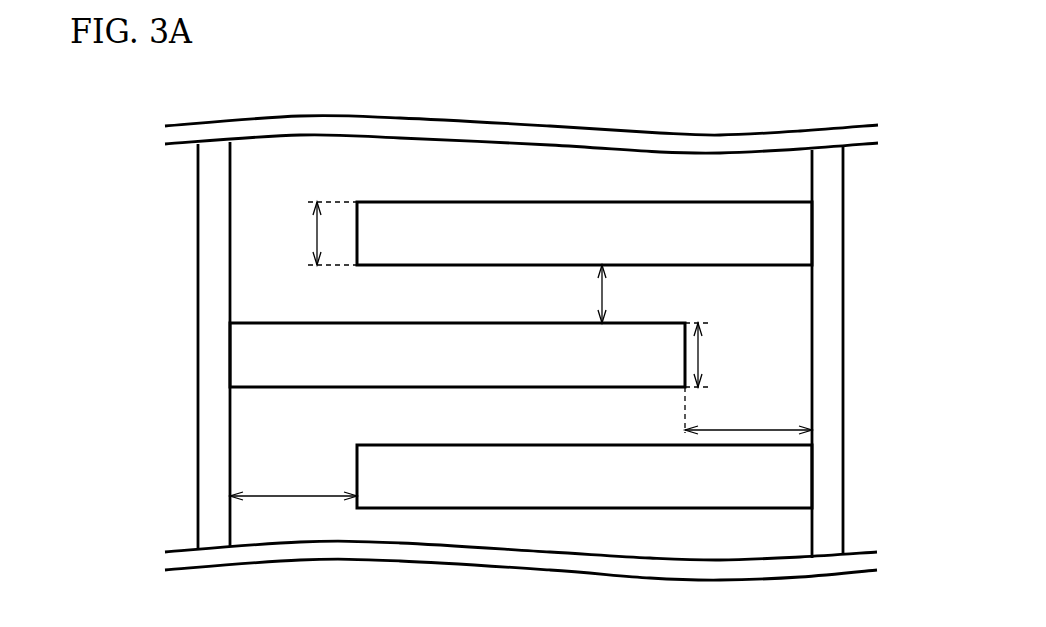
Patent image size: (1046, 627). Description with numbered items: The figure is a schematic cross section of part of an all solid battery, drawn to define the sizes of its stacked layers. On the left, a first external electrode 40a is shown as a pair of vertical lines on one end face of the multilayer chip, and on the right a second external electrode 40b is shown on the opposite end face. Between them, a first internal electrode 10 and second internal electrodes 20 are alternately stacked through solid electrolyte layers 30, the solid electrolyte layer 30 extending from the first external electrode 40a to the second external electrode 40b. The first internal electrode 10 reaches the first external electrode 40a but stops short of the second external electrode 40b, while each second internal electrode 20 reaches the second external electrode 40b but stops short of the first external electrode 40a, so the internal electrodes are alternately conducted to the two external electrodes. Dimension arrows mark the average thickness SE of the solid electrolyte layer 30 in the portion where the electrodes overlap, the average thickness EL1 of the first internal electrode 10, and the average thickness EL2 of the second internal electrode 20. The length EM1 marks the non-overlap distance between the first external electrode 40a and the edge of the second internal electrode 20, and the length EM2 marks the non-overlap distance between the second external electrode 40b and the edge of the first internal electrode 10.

The first internal electrode 10 is at (303, 387).
The second internal electrode 20 is at (755, 200).
The solid electrolyte layer 30 is at (507, 293).
The first external electrode 40a is at (198, 199).
The second external electrode 40b is at (843, 235).
The thickness EL1 is at (721, 355).
The thickness EL2 is at (306, 233).
The thickness SE is at (582, 294).
The length EM1 is at (293, 480).
The length EM2 is at (748, 410).